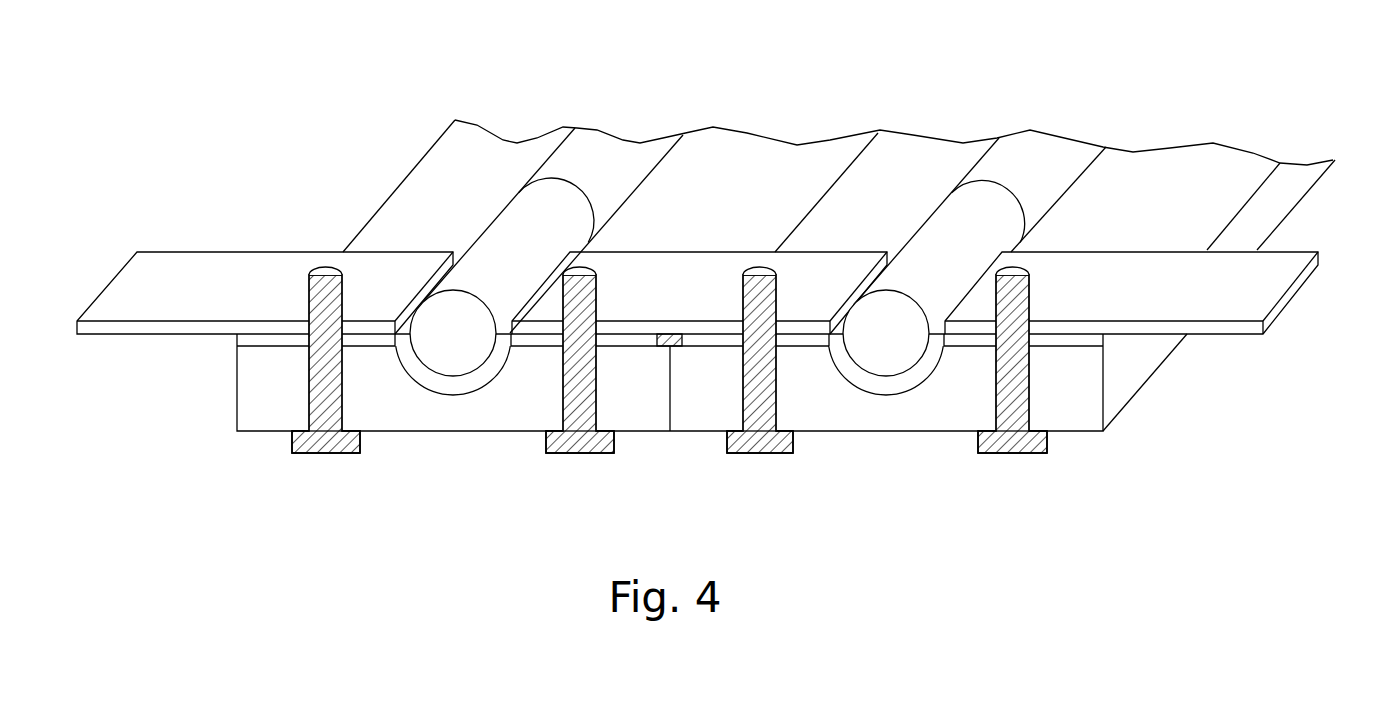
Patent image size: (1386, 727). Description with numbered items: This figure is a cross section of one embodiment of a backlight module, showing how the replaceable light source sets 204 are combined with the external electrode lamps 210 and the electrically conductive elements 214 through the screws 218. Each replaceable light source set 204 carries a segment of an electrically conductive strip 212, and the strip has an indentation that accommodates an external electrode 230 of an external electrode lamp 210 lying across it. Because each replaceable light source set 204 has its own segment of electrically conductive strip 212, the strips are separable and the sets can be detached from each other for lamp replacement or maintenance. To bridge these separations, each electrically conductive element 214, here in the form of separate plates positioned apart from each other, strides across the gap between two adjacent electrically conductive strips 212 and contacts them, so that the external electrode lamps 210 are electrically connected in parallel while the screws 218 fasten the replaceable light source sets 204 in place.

The replaceable light source set 204 is at (728, 342).
The external electrode lamp 210 is at (1033, 150).
The electrically conductive strip 212 is at (1077, 342).
The electrically conductive element 214 is at (1282, 265).
The screw 218 is at (1015, 453).
The external electrode 230 is at (893, 338).